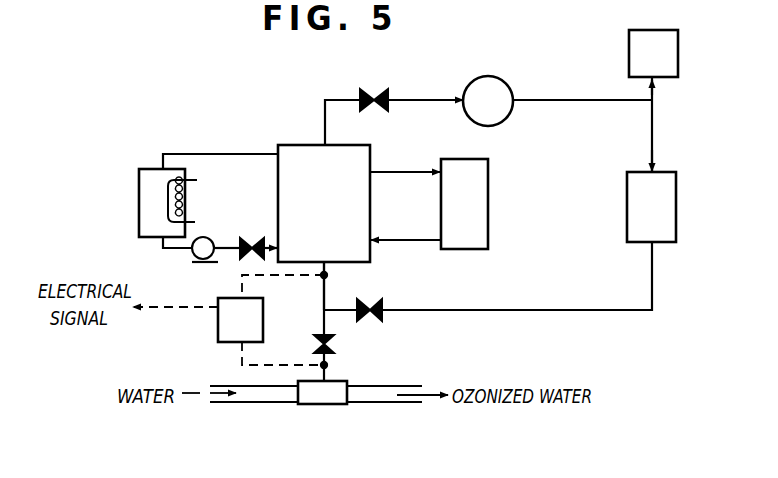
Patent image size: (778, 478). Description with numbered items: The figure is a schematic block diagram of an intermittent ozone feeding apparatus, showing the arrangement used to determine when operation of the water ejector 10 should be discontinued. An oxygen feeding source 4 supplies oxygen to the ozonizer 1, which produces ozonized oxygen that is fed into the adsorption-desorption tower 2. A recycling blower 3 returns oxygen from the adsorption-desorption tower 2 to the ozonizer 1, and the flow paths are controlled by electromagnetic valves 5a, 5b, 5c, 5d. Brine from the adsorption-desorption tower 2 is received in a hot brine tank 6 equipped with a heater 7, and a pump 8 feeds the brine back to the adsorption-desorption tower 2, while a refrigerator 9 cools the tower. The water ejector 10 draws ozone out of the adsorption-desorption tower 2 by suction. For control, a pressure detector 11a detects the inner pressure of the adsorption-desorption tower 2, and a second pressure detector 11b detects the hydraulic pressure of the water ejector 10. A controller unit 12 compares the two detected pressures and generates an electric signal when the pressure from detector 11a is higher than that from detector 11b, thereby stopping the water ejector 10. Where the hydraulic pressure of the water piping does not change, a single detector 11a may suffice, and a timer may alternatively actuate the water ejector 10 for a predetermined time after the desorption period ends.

The ozonizer 1 is at (676, 213).
The adsorption-desorption tower 2 is at (307, 145).
The recycling blower 3 is at (474, 79).
The oxygen feeding source 4 is at (678, 55).
The electromagnetic valve 5a is at (376, 91).
The electromagnetic valve 5b is at (380, 306).
The electromagnetic valve 5c is at (335, 346).
The electromagnetic valve 5d is at (255, 240).
The hot brine tank 6 is at (139, 210).
The heater 7 is at (190, 181).
The pump 8 is at (190, 262).
The refrigerator 9 is at (488, 203).
The water ejector 10 is at (335, 404).
The pressure detector 11a is at (326, 276).
The pressure detector 11b is at (408, 387).
The controller unit 12 is at (217, 328).